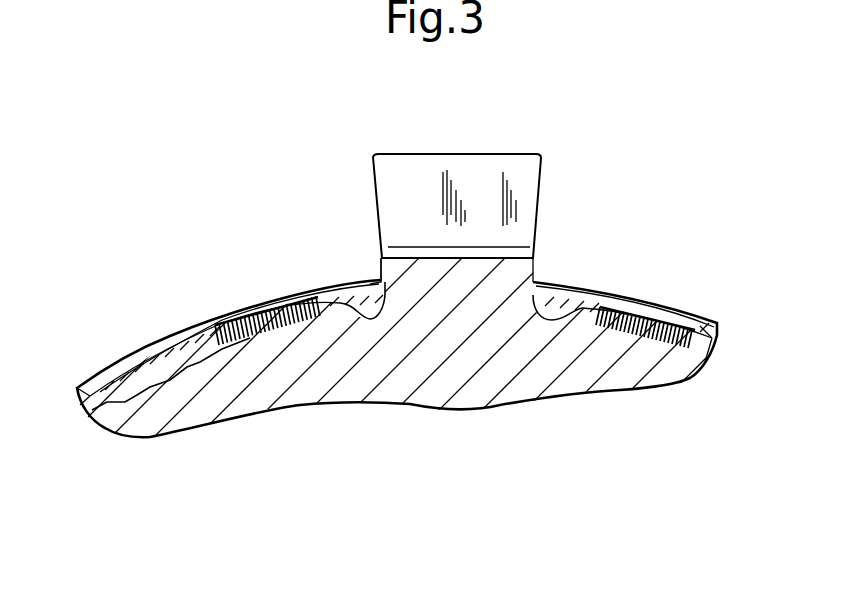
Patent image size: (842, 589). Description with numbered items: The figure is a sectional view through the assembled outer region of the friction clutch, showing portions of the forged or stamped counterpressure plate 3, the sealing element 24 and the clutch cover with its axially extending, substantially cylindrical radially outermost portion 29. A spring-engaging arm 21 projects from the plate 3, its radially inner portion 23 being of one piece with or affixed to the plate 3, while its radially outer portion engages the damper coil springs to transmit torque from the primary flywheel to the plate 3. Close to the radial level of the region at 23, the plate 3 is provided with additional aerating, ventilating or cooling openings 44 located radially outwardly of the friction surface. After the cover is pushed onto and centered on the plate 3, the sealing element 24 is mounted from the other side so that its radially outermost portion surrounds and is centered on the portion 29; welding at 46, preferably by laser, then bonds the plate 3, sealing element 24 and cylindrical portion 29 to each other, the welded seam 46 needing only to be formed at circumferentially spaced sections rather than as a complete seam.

The counterpressure plate 3 is at (580, 368).
The arm 21 is at (413, 187).
The radially inner portion of the arm 23 is at (382, 284).
The sealing element 24 is at (700, 324).
The radially outermost portion of the clutch cover 29 is at (108, 383).
The aerating opening 44 is at (152, 378).
The welded seam 46 is at (245, 302).